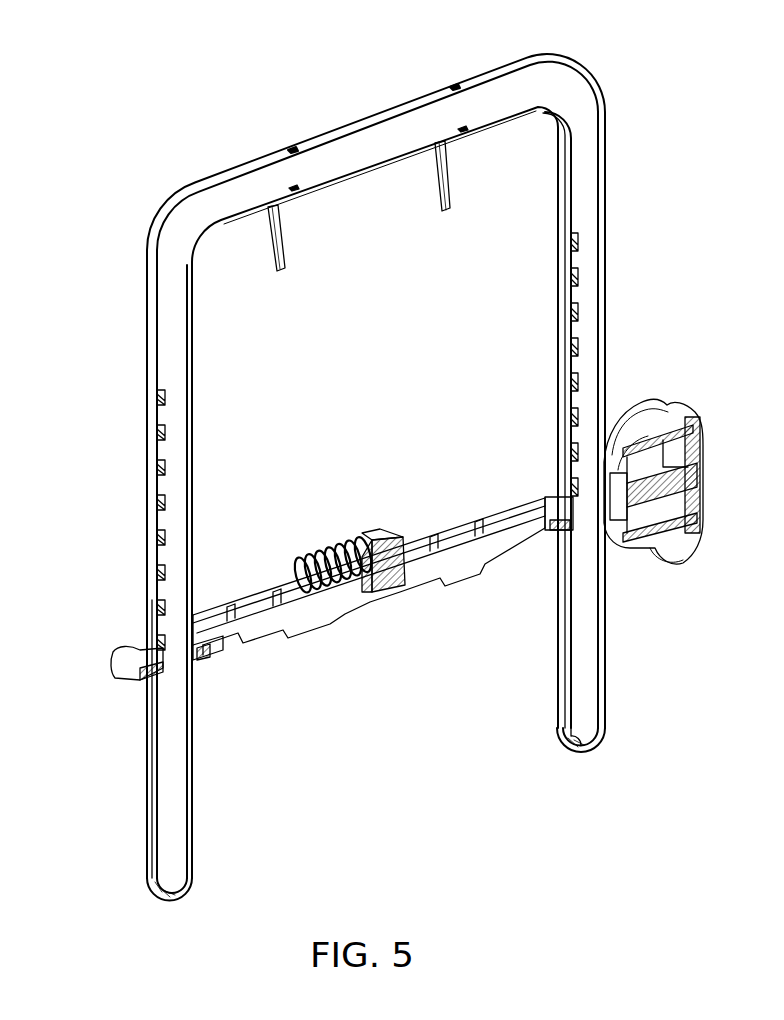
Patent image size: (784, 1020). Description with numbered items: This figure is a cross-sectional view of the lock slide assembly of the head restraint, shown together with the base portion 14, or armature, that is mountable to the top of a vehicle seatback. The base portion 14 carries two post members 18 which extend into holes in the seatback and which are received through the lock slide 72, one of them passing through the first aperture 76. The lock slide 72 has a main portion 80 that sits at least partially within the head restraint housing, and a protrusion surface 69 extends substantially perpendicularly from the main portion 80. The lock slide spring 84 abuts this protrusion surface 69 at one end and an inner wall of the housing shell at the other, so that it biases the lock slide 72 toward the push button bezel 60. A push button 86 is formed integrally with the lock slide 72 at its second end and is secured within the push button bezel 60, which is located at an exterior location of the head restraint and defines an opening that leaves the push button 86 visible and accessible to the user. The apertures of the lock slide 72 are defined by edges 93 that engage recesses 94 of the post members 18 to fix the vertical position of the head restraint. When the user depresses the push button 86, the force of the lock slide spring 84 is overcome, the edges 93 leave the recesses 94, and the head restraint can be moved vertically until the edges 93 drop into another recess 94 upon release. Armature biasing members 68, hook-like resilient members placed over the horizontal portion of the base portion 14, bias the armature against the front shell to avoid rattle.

The base portion 14 is at (212, 158).
The post members 18 is at (148, 786).
The push button bezel 60 is at (665, 402).
The armature biasing members 68 is at (288, 266).
The protrusion surface 69 is at (378, 537).
The lock slide 72 is at (352, 622).
The first aperture 76 is at (205, 690).
The main portion 80 is at (392, 590).
The lock slide spring 84 is at (305, 560).
The push button 86 is at (701, 479).
The edges 93 is at (558, 538).
The recesses 94 is at (553, 351).